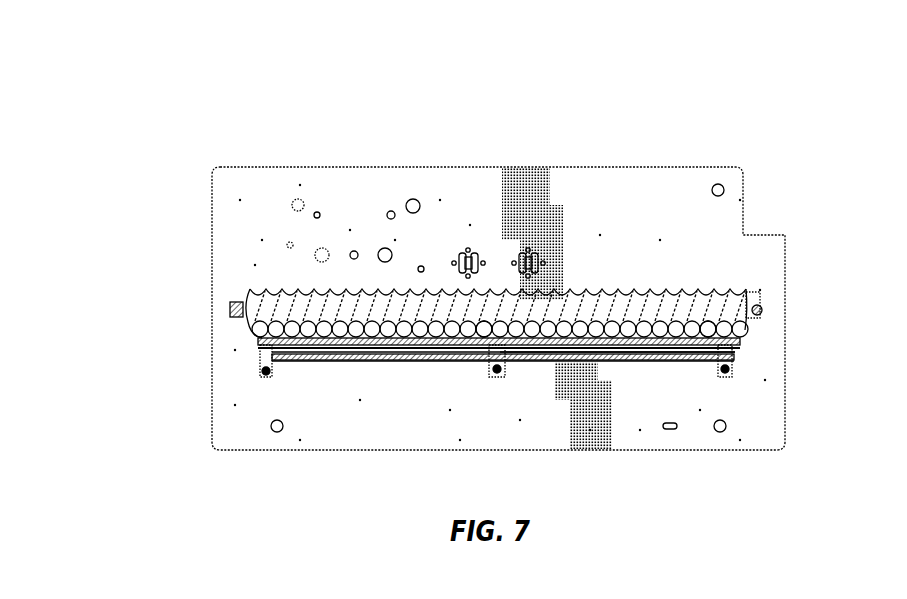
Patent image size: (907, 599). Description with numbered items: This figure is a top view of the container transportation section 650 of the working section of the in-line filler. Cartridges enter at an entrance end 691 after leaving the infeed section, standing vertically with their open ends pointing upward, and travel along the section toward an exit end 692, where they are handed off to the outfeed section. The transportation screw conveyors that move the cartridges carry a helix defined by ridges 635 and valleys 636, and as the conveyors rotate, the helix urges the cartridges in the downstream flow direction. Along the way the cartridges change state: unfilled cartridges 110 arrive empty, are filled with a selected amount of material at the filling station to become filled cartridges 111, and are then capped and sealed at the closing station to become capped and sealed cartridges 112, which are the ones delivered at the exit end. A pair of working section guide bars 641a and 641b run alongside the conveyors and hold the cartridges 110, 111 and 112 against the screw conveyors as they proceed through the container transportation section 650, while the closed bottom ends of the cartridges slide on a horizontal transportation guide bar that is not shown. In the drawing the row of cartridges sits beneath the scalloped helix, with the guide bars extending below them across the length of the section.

The container transportation section 650 is at (504, 120).
The entrance end 691 is at (252, 293).
The exit end 692 is at (745, 281).
The ridges 635 is at (283, 292).
The valleys 636 is at (322, 292).
The unfilled cartridges 110 is at (353, 333).
The filled cartridges 111 is at (483, 332).
The capped and sealed cartridges 112 is at (705, 332).
The working section guide bar 641a is at (402, 353).
The working section guide bar 641b is at (623, 348).